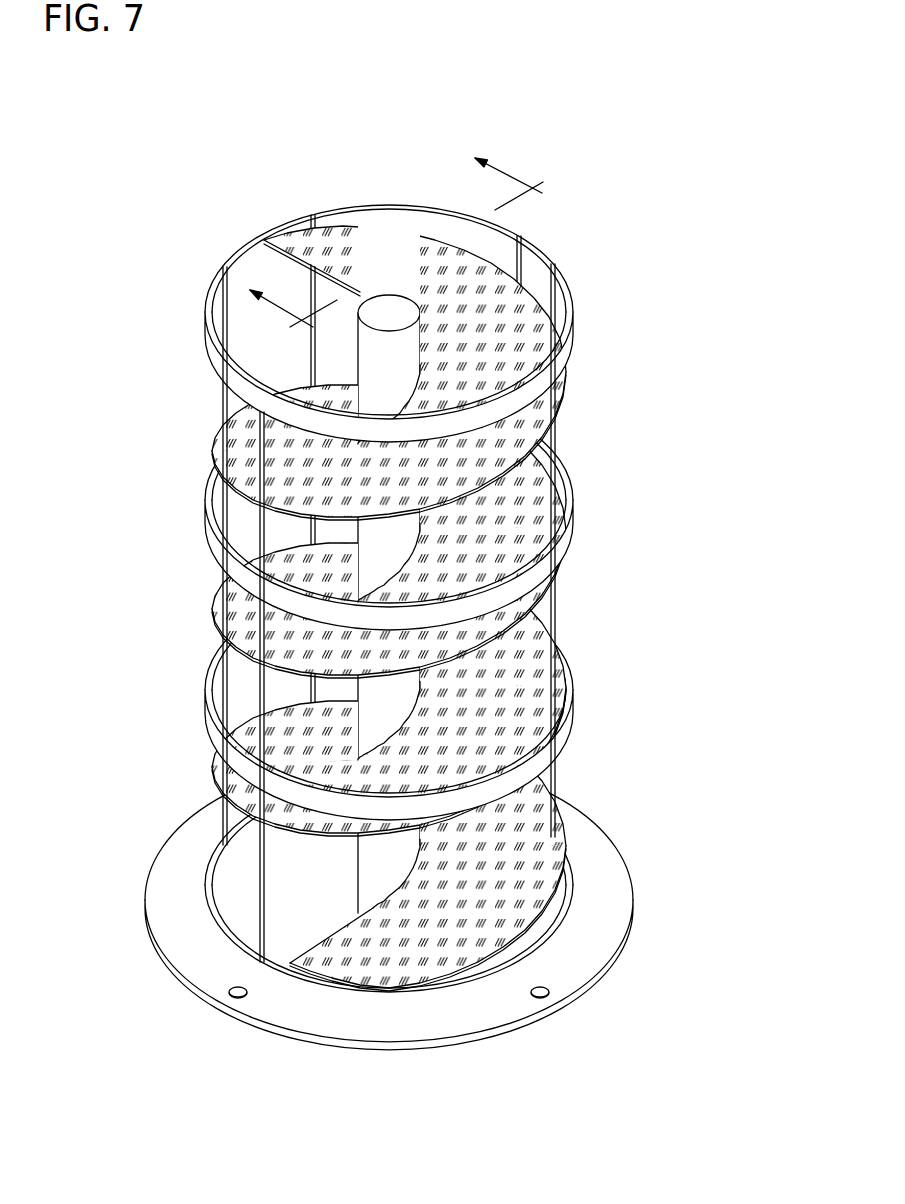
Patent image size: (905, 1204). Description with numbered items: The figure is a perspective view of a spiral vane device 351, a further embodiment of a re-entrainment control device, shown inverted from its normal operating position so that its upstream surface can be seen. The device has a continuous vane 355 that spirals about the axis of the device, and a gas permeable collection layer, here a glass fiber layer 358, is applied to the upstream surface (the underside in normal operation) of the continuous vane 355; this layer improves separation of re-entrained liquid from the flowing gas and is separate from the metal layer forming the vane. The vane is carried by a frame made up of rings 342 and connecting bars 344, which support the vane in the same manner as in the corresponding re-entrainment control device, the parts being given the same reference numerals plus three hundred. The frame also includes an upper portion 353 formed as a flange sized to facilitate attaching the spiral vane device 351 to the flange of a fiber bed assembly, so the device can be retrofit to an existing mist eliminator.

The spiral vane device 351 is at (373, 561).
The rings 342 is at (212, 362).
The connecting bars 344 is at (232, 298).
The upper portion 353 is at (602, 905).
The continuous vane 355 is at (262, 279).
The glass fiber layer 358 is at (482, 305).